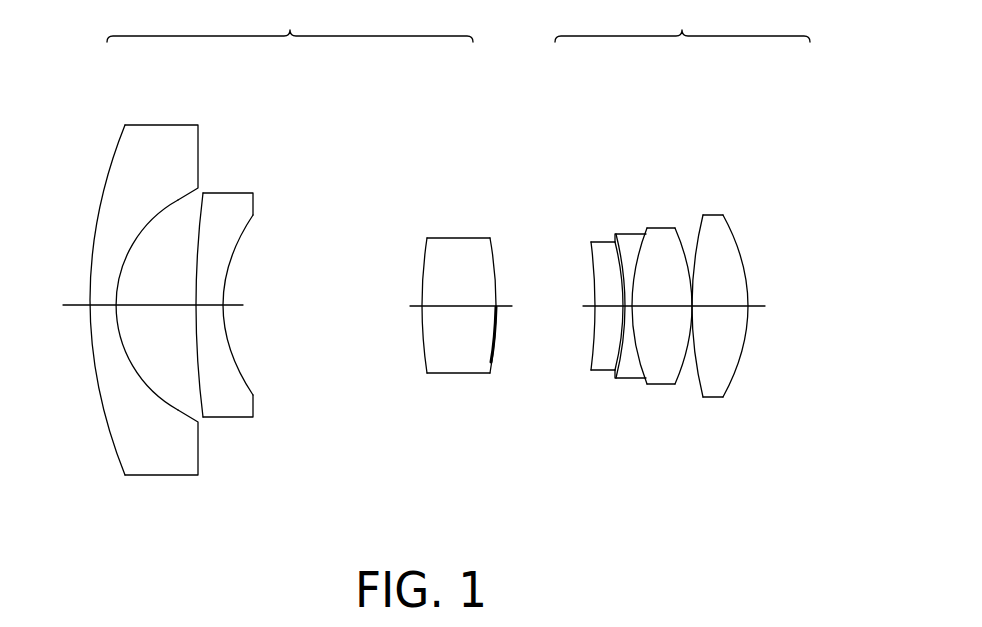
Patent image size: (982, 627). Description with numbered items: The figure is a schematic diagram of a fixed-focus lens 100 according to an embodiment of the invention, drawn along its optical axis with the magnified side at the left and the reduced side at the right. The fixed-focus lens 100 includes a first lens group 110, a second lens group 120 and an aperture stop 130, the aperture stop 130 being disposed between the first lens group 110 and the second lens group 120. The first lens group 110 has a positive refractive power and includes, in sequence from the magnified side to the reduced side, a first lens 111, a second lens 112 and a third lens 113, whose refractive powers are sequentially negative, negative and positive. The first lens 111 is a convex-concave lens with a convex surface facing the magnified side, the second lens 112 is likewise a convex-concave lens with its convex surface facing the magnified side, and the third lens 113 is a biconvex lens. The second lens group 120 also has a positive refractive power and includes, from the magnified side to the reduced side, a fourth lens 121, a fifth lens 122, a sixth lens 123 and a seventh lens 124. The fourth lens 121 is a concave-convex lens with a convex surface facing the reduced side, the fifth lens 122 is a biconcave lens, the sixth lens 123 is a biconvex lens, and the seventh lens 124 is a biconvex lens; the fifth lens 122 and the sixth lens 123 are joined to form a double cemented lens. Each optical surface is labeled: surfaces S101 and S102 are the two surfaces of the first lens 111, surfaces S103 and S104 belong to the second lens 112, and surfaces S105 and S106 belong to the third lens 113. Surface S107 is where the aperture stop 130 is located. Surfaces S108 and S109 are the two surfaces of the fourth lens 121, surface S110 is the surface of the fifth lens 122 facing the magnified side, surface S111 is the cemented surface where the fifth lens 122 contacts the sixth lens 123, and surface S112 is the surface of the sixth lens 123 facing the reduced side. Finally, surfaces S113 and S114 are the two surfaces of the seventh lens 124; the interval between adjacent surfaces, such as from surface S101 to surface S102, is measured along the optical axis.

The fixed-focus lens 100 is at (777, 542).
The first lens group 110 is at (290, 21).
The second lens group 120 is at (682, 21).
The first lens 111 is at (138, 147).
The second lens 112 is at (220, 213).
The third lens 113 is at (455, 265).
The fourth lens 121 is at (603, 262).
The fifth lens 122 is at (635, 247).
The sixth lens 123 is at (672, 260).
The seventh lens 124 is at (717, 258).
The aperture stop 130 is at (493, 348).
The surface S101 is at (96, 415).
The surface S102 is at (168, 385).
The surface S103 is at (186, 222).
The surface S104 is at (249, 233).
The surface S105 is at (411, 263).
The surface S106 is at (504, 256).
The surface S107 is at (507, 312).
The surface S108 is at (581, 286).
The surface S109 is at (622, 255).
The surface S110 is at (614, 350).
The surface S111 is at (630, 364).
The surface S112 is at (694, 246).
The surface S113 is at (685, 361).
The surface S114 is at (754, 250).